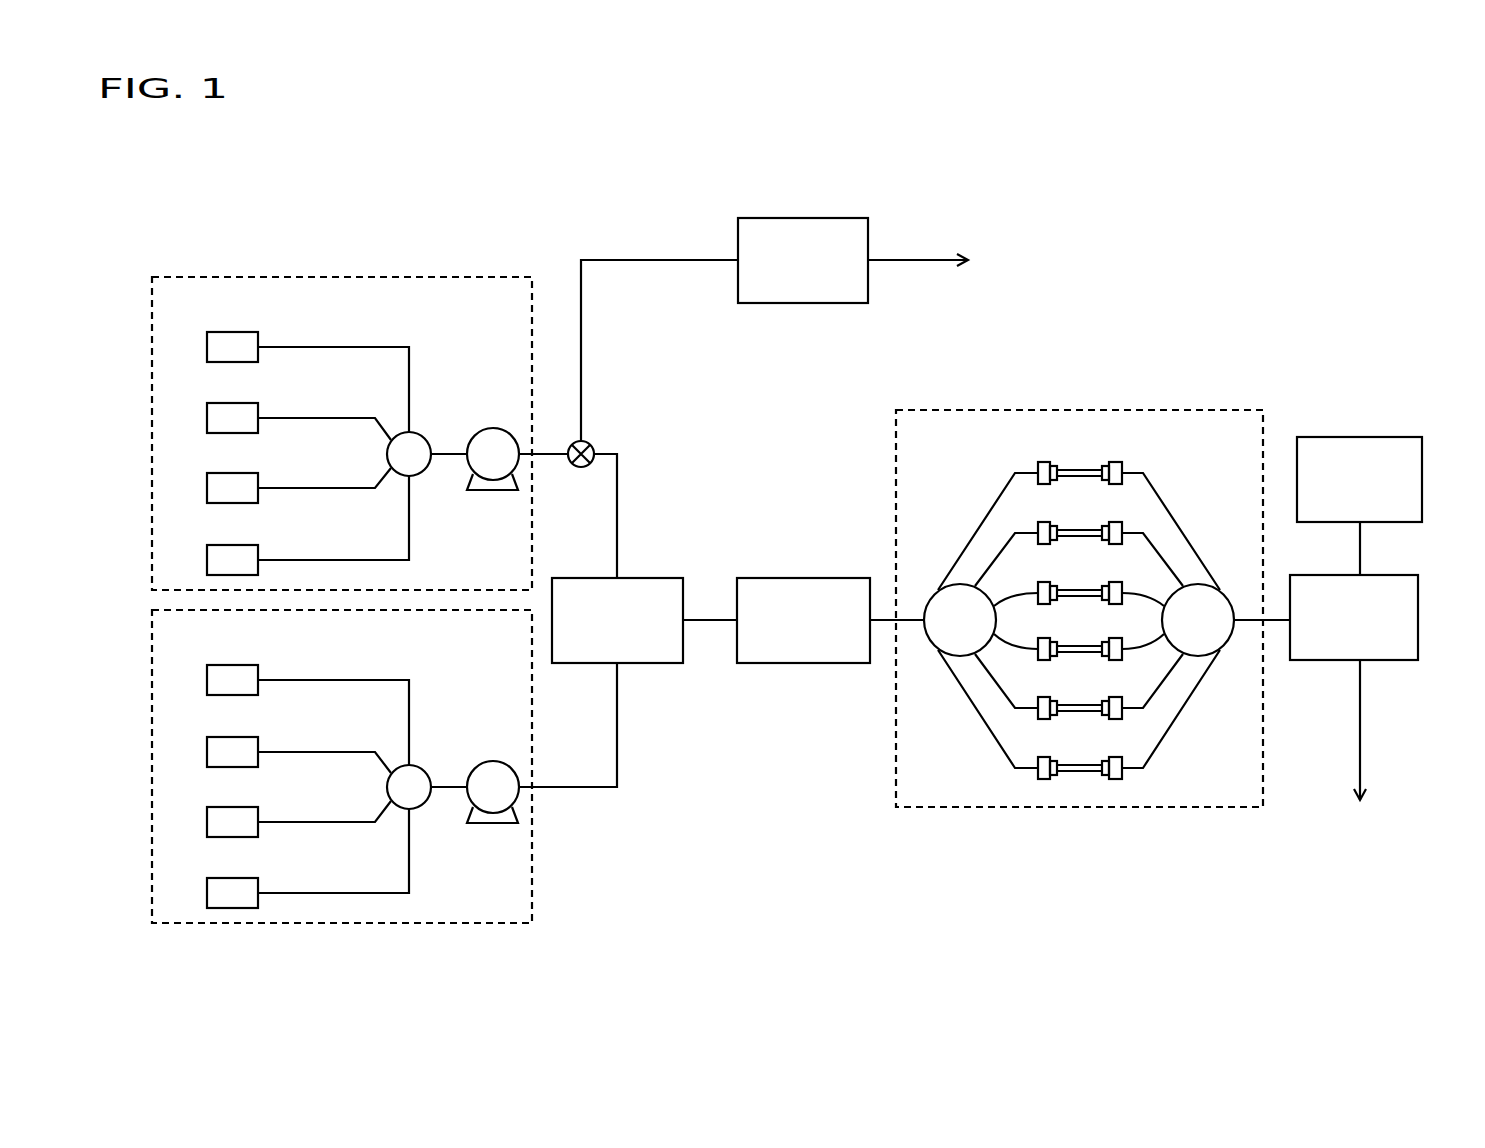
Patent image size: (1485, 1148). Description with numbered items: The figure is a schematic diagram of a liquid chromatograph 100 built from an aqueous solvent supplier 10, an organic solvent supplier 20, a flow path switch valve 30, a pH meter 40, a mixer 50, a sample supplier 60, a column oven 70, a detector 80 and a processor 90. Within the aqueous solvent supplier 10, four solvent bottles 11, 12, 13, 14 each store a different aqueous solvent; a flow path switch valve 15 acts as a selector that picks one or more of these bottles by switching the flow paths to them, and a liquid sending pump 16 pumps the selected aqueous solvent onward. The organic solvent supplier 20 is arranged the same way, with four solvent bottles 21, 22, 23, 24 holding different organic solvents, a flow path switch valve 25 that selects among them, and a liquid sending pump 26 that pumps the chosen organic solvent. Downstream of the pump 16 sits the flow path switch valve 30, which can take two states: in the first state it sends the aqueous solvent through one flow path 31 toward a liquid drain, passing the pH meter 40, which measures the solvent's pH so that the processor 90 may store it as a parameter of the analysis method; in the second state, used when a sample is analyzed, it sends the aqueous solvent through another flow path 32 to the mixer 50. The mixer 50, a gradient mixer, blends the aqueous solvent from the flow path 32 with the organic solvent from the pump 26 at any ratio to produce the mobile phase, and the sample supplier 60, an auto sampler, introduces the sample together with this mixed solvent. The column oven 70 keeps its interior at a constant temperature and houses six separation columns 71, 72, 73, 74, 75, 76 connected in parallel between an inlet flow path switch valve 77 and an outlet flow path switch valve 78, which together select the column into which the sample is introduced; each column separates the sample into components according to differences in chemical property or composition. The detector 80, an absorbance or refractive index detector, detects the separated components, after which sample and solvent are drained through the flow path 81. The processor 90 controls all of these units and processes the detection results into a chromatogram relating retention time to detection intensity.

The liquid chromatograph 100 is at (1468, 183).
The aqueous solvent supplier 10 is at (533, 436).
The solvent bottle 11 is at (207, 349).
The solvent bottle 12 is at (207, 420).
The solvent bottle 13 is at (207, 490).
The solvent bottle 14 is at (207, 562).
The flow path switch valve 15 is at (417, 447).
The liquid sending pump 16 is at (491, 440).
The organic solvent supplier 20 is at (533, 766).
The solvent bottle 21 is at (207, 682).
The solvent bottle 22 is at (207, 753).
The solvent bottle 23 is at (207, 823).
The solvent bottle 24 is at (207, 893).
The flow path switch valve 25 is at (417, 780).
The liquid sending pump 26 is at (491, 773).
The flow path switch valve 30 is at (590, 443).
The flow path 31 is at (658, 258).
The flow path 32 is at (618, 516).
The pH meter 40 is at (803, 218).
The mixer 50 is at (635, 578).
The sample supplier 60 is at (805, 578).
The column oven 70 is at (1081, 410).
The separation column 71 is at (1080, 467).
The separation column 72 is at (1080, 527).
The separation column 73 is at (1080, 587).
The separation column 74 is at (1080, 643).
The separation column 75 is at (1080, 702).
The separation column 76 is at (1080, 762).
The flow path switch valve 77 is at (958, 597).
The flow path switch valve 78 is at (1198, 597).
The detector 80 is at (1370, 575).
The flow path 81 is at (1357, 725).
The processor 90 is at (1360, 437).